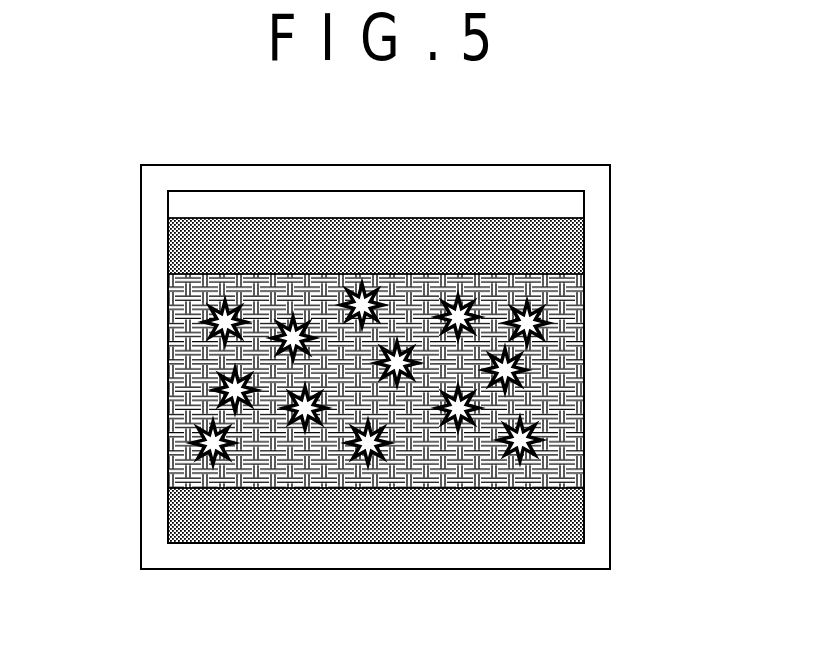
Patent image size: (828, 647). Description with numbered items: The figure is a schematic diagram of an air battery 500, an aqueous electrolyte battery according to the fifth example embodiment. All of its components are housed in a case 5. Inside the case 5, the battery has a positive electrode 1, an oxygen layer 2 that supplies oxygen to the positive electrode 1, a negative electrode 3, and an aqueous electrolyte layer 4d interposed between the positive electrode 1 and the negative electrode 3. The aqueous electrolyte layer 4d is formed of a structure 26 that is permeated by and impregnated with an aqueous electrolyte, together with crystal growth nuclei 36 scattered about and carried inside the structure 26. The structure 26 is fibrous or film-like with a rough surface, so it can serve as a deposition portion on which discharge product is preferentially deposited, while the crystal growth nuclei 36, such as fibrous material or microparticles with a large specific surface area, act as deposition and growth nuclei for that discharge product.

The air battery 500 is at (412, 122).
The case 5 is at (587, 555).
The aqueous electrolyte layer 4d is at (591, 395).
The oxygen layer 2 is at (290, 207).
The positive electrode 1 is at (183, 250).
The negative electrode 3 is at (498, 527).
The structure 26 is at (560, 303).
The crystal growth nuclei 36 is at (552, 321).